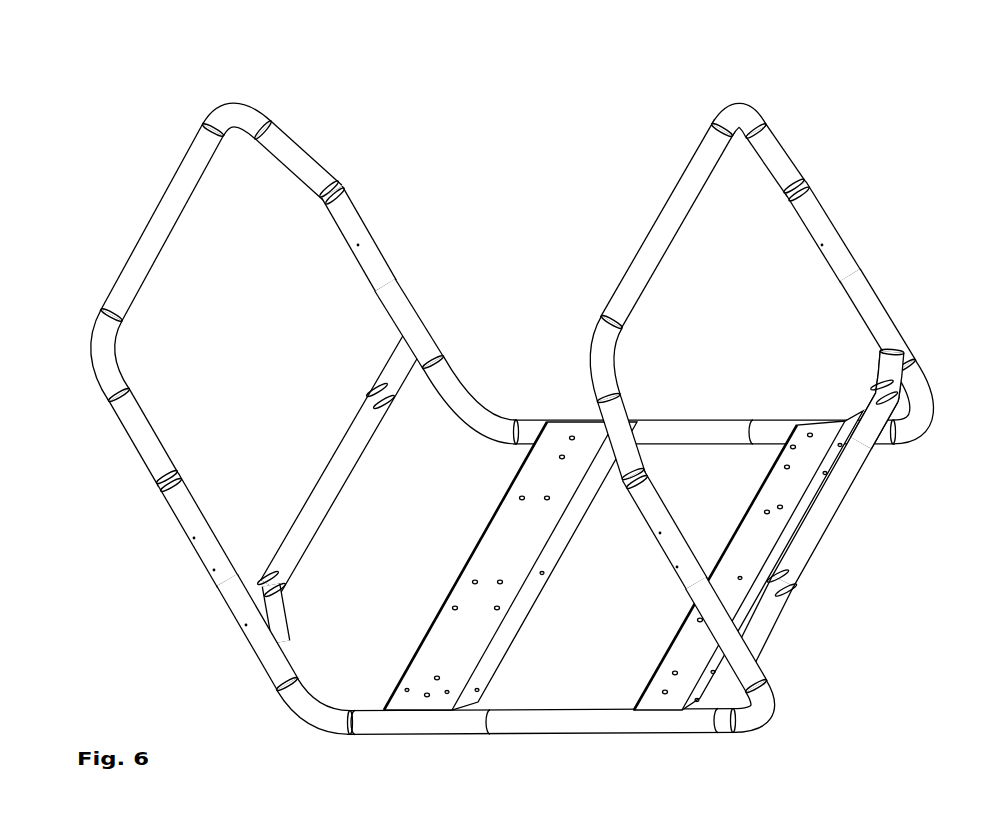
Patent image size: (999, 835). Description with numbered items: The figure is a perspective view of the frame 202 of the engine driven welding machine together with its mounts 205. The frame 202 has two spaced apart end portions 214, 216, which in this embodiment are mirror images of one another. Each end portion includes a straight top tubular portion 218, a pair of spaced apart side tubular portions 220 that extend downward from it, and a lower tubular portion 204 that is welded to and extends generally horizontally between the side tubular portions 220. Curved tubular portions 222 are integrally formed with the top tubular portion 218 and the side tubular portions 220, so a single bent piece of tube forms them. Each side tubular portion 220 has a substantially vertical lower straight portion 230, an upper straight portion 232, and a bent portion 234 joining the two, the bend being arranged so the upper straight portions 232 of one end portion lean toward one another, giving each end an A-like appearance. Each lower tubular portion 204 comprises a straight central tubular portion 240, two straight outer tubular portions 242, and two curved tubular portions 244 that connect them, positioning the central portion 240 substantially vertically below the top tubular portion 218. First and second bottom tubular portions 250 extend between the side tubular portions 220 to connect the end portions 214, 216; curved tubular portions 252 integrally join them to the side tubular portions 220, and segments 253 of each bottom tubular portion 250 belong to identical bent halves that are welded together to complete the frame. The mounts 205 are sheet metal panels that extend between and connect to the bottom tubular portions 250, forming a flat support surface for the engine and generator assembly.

The frame 202 is at (549, 58).
The lower tubular portion 204 is at (330, 496).
The mount 205 is at (503, 528).
The first end portion 214 is at (371, 234).
The second end portion 216 is at (842, 227).
The top tubular portion 218 is at (168, 203).
The side tubular portion 220 is at (349, 196).
The curved tubular portion 222 is at (236, 110).
The lower straight portion 230 is at (398, 305).
The upper straight portion 232 is at (302, 153).
The bent portion 234 is at (340, 183).
The straight central tubular portion 240 is at (348, 446).
The straight outer tubular portion 242 is at (403, 378).
The curved tubular portion 244 is at (372, 403).
The bottom tubular portion 250 is at (513, 729).
The curved tubular portion 252 is at (315, 707).
The segment 253 is at (535, 424).